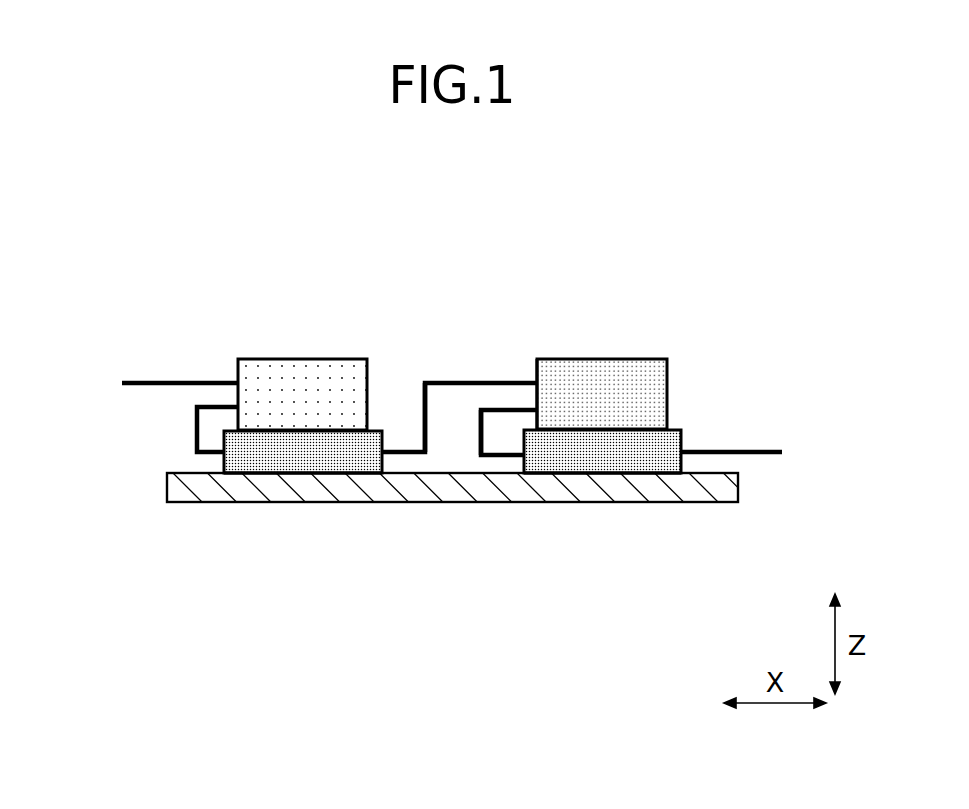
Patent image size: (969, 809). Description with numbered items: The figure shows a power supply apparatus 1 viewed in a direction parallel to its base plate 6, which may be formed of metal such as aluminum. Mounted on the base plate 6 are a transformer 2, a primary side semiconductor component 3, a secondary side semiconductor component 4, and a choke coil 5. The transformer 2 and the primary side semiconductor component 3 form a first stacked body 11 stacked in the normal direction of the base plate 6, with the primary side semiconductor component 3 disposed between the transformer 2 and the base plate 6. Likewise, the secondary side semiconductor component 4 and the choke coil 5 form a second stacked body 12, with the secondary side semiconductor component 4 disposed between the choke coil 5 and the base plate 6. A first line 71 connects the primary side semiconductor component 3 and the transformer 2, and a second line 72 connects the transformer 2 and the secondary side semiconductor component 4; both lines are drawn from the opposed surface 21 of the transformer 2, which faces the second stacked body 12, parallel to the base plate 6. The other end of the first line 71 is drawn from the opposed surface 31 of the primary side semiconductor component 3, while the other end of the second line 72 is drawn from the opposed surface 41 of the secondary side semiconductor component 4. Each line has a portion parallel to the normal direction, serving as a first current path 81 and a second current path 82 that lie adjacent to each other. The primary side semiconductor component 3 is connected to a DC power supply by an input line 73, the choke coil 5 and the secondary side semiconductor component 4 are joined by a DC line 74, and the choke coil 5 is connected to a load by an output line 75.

The power supply apparatus 1 is at (571, 268).
The transformer 2 is at (586, 377).
The primary side semiconductor component 3 is at (595, 453).
The secondary side semiconductor component 4 is at (267, 457).
The choke coil 5 is at (308, 378).
The base plate 6 is at (662, 492).
The first stacked body 11 is at (646, 344).
The second stacked body 12 is at (339, 338).
The opposed surface of the transformer 21 is at (536, 372).
The opposed surface of the primary side semiconductor component 31 is at (525, 467).
The opposed surface of the secondary side semiconductor component 41 is at (393, 466).
The first line 71 is at (488, 458).
The second line 72 is at (432, 381).
The input line 73 is at (730, 451).
The DC line 74 is at (196, 428).
The output line 75 is at (162, 381).
The first current path 81 is at (478, 433).
The second current path 82 is at (427, 436).